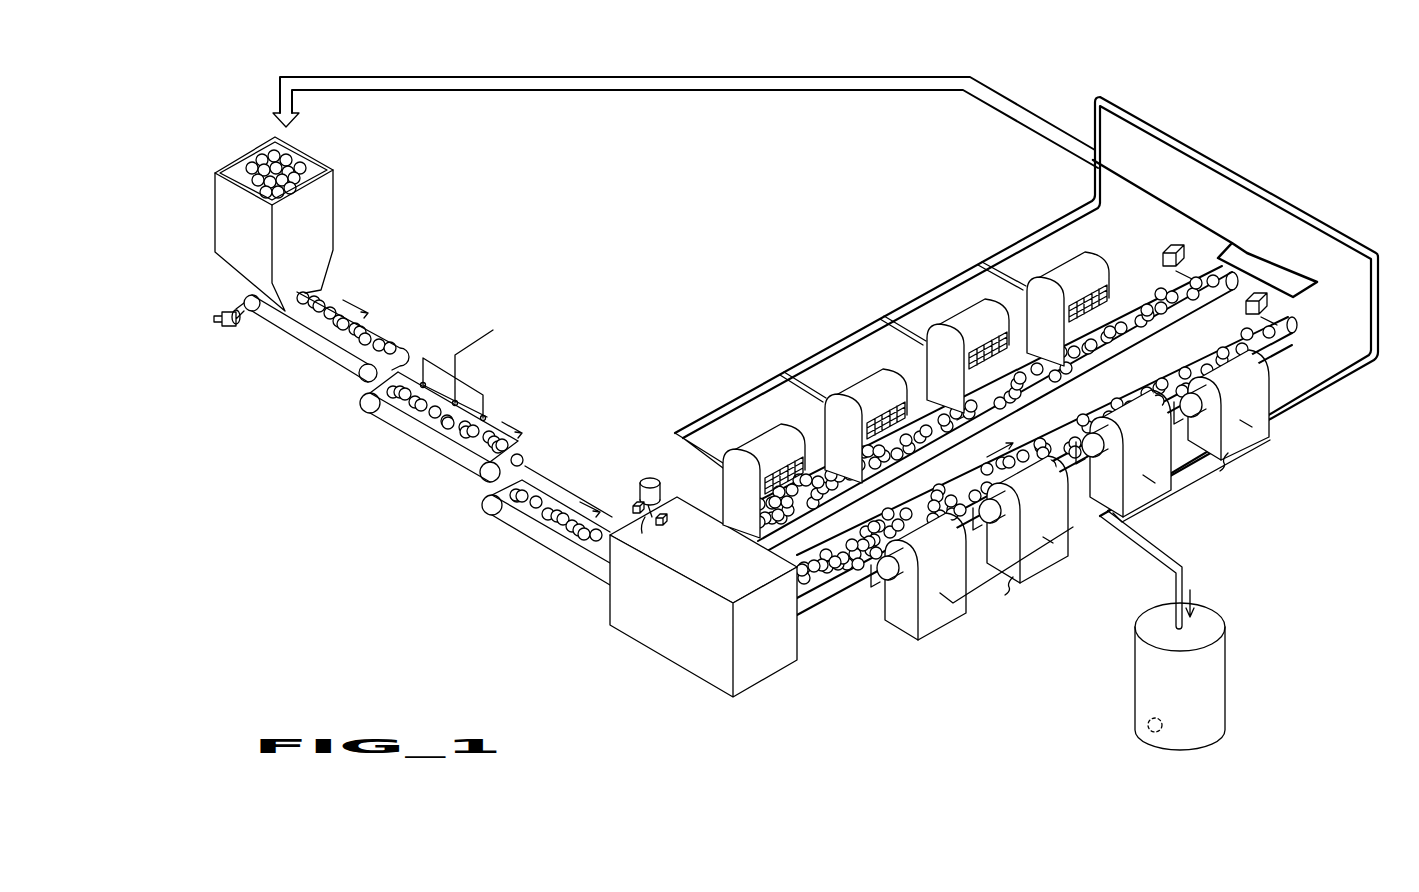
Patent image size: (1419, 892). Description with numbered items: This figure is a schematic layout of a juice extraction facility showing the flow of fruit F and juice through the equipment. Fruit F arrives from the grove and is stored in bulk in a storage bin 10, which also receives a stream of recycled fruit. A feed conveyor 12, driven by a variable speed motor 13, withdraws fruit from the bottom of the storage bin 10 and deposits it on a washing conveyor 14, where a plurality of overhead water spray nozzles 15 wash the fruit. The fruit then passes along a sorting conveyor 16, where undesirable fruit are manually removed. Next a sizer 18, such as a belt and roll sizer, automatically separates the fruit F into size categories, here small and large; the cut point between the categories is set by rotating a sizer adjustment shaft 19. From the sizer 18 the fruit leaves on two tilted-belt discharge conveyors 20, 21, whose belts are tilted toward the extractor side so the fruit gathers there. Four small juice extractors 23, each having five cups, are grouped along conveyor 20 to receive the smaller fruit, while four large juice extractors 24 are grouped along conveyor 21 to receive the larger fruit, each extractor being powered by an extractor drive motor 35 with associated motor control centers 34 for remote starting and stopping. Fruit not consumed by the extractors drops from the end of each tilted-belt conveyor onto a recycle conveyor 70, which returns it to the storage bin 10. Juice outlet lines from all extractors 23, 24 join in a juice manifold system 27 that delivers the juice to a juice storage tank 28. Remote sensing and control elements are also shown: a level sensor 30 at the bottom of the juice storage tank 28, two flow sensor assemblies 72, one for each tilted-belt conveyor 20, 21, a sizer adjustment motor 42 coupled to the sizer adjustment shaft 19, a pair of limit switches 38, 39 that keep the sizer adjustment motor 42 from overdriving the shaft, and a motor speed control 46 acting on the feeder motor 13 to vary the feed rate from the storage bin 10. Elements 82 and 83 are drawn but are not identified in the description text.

The storage bin 10 is at (312, 240).
The feed conveyor 12 is at (308, 323).
The variable speed motor 13 is at (243, 303).
The washing conveyor 14 is at (428, 424).
The overhead water spray nozzles 15 is at (485, 414).
The sorting conveyor 16 is at (540, 520).
The sizer 18 is at (680, 615).
The sizer adjustment shaft 19 is at (657, 534).
The tilted-belt discharge conveyor 20 is at (760, 548).
The tilted-belt discharge conveyor 21 is at (793, 562).
The small juice extractors 23 is at (924, 377).
The large juice extractors 24 is at (966, 611).
The juice manifold system 27 is at (1212, 160).
The juice storage tank 28 is at (1198, 695).
The level sensor 30 is at (1148, 731).
The motor control centers 34 is at (945, 355).
The extractor drive motor 35 is at (913, 373).
The limit switch 38 is at (633, 503).
The limit switch 39 is at (672, 524).
The sizer adjustment motor 42 is at (650, 478).
The motor speed control 46 is at (214, 321).
The recycle conveyor 70 is at (1000, 104).
The flow sensor assemblies 72 is at (1209, 260).
The nozzles 82 is at (1162, 262).
The blowers 83 is at (1188, 240).
The fruit F is at (295, 173).